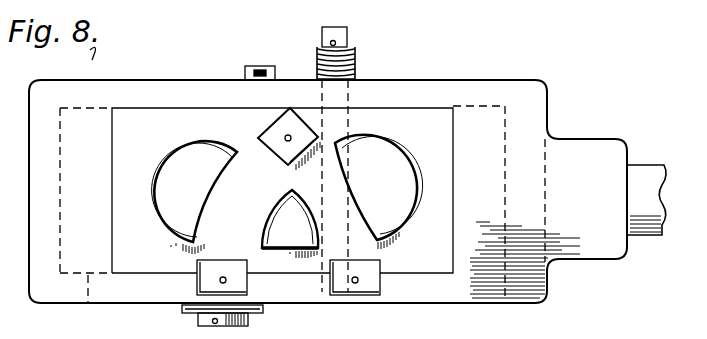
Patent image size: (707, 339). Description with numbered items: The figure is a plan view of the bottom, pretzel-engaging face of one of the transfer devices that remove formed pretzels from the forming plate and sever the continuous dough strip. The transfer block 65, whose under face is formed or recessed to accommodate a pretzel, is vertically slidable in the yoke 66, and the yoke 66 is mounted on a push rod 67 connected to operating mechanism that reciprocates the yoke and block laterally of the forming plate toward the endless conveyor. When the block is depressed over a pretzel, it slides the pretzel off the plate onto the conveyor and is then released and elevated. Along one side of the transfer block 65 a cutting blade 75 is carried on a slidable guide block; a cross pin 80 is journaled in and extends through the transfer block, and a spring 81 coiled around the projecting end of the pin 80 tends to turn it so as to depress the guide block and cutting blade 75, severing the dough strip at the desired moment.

The transfer block 65 is at (433, 112).
The yoke 66 is at (180, 88).
The push rod 67 is at (647, 165).
The cutting blade 75 is at (262, 308).
The cross pin 80 is at (347, 41).
The spring 81 is at (355, 65).